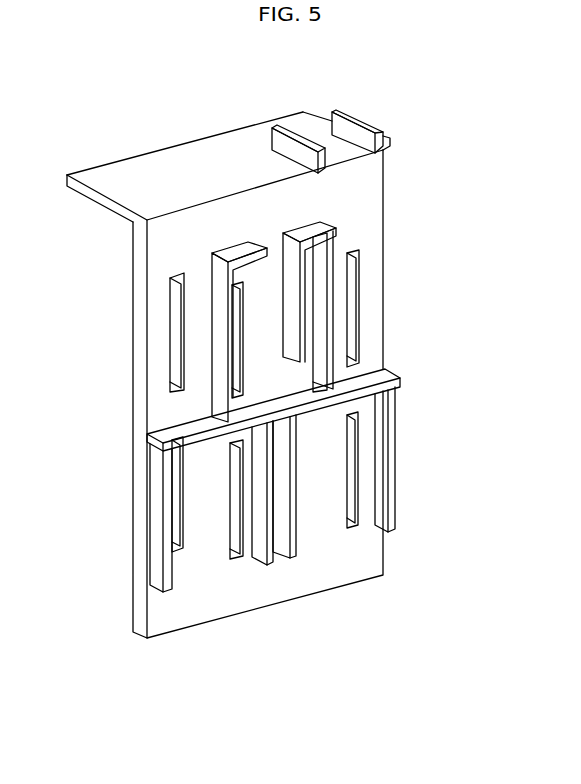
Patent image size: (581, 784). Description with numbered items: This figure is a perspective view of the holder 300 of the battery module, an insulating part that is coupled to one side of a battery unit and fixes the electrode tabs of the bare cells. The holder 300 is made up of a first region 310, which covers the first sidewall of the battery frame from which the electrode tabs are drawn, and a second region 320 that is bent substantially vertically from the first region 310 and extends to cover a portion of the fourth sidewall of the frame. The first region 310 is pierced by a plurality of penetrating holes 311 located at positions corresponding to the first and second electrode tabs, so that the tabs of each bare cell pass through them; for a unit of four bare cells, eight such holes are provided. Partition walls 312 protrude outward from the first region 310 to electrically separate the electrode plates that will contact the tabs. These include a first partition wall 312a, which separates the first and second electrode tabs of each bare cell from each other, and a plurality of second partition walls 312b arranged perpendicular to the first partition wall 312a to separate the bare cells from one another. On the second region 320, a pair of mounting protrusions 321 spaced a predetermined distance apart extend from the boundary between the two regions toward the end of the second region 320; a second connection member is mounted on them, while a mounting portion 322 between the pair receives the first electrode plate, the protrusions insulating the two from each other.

The holder 300 is at (90, 140).
The first region 310 is at (377, 322).
The penetrating holes 311 is at (353, 282).
The partition walls 312 is at (500, 368).
The first partition wall 312a is at (390, 368).
The second partition walls 312b is at (393, 434).
The second region 320 is at (197, 147).
The mounting protrusions 321 is at (362, 120).
The mounting portion 322 is at (330, 148).